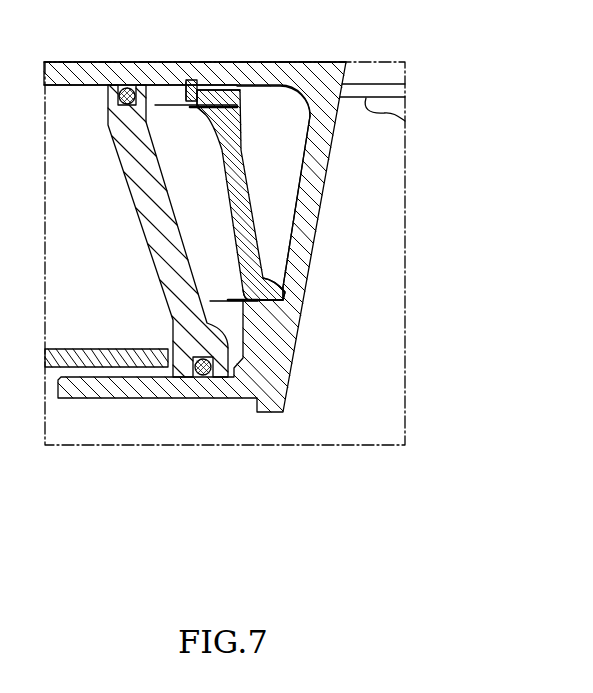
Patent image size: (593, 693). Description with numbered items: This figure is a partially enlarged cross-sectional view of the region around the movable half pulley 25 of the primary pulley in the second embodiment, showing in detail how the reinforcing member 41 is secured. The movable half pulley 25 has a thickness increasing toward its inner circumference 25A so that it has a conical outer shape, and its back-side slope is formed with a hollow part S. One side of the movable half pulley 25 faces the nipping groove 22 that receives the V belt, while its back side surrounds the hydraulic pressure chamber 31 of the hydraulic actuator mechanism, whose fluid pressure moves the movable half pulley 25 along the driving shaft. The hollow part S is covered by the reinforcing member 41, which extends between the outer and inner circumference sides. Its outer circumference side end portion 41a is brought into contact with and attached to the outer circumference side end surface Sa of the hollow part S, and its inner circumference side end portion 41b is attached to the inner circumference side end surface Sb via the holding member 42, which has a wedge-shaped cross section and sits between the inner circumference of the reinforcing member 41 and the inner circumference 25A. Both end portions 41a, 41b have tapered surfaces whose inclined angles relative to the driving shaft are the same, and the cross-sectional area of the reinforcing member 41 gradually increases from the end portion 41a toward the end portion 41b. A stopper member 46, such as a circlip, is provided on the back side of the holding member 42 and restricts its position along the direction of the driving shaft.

The movable half pulley 25 is at (268, 406).
The inner circumference 25A is at (277, 70).
The nipping groove 22 is at (373, 245).
The hydraulic pressure chamber 31 is at (212, 225).
The reinforcing member 41 is at (244, 157).
The outer circumference side end portion 41a is at (262, 324).
The inner circumference side end portion 41b is at (216, 93).
The holding member 42 is at (192, 78).
The stopper member 46 is at (180, 88).
The hollow part S is at (280, 220).
The outer circumference side end surface Sa is at (306, 298).
The inner circumference side end surface Sb is at (250, 99).